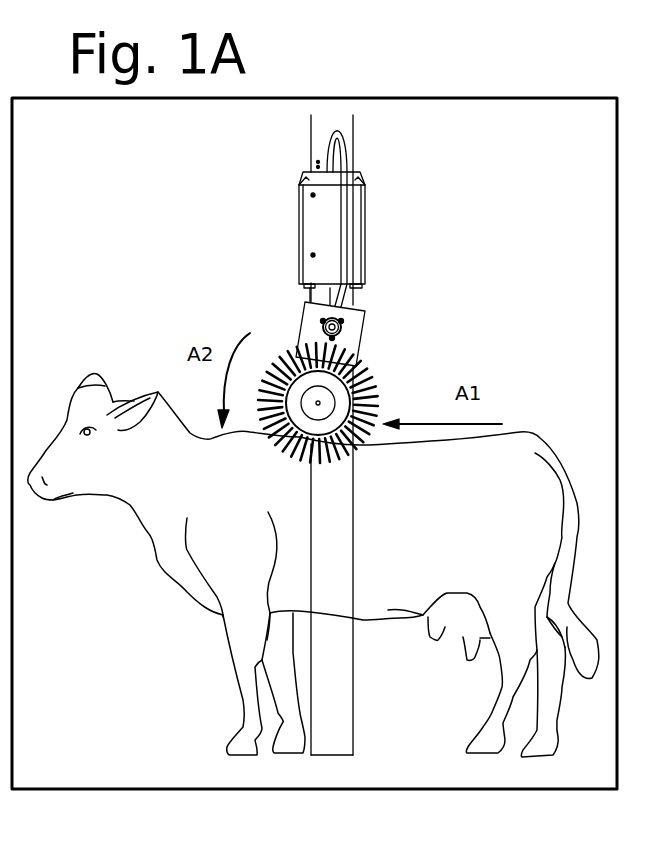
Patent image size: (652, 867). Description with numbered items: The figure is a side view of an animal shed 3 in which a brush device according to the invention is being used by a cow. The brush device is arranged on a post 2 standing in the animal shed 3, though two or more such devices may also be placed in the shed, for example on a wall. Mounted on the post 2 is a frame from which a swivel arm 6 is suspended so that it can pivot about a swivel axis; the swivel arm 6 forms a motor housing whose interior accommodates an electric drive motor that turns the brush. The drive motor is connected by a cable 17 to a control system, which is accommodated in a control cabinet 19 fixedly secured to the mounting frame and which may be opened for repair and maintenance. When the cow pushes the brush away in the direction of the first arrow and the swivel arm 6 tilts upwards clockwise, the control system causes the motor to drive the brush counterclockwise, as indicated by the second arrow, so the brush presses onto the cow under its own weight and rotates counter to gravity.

The post 2 is at (320, 138).
The animal shed 3 is at (617, 335).
The swivel arm 6 is at (348, 335).
The cable 17 is at (340, 160).
The control cabinet 19 is at (318, 222).